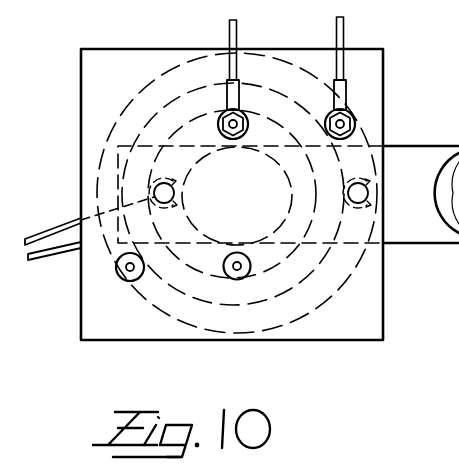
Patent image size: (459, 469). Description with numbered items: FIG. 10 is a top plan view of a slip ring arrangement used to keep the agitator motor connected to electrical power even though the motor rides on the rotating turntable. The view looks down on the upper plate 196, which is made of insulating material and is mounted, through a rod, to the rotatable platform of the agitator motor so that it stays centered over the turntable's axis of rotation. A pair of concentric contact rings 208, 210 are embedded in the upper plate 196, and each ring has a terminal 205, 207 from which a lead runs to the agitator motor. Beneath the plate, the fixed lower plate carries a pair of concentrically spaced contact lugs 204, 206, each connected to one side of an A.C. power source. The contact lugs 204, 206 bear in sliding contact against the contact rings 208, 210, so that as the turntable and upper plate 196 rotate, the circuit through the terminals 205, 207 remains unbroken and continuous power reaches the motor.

The upper plate 196 is at (377, 92).
The contact lug 204 is at (176, 193).
The terminal 205 is at (352, 124).
The contact lug 206 is at (370, 193).
The terminal 207 is at (249, 131).
The contact ring 208 is at (148, 82).
The contact ring 210 is at (101, 138).